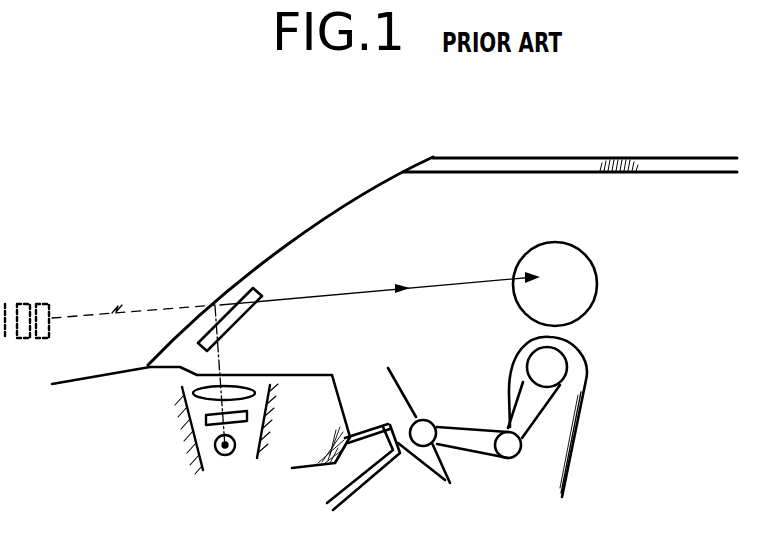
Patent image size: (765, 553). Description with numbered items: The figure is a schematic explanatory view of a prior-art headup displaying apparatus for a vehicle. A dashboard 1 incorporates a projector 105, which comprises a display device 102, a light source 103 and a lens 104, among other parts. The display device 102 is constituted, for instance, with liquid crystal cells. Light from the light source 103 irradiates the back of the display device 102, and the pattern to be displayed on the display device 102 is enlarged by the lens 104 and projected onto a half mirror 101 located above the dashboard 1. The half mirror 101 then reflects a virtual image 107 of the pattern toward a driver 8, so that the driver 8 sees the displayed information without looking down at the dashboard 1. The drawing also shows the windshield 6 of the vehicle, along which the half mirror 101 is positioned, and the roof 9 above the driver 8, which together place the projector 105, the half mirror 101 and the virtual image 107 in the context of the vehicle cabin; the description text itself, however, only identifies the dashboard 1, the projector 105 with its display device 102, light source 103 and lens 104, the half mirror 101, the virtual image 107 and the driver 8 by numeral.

The dashboard 1 is at (327, 392).
The windshield 6 is at (330, 217).
The driver 8 is at (597, 290).
The roof 9 is at (671, 159).
The half mirror 101 is at (268, 290).
The display device 102 is at (208, 423).
The light source 103 is at (215, 445).
The lens 104 is at (202, 394).
The projector 105 is at (161, 462).
The virtual image 107 is at (25, 300).